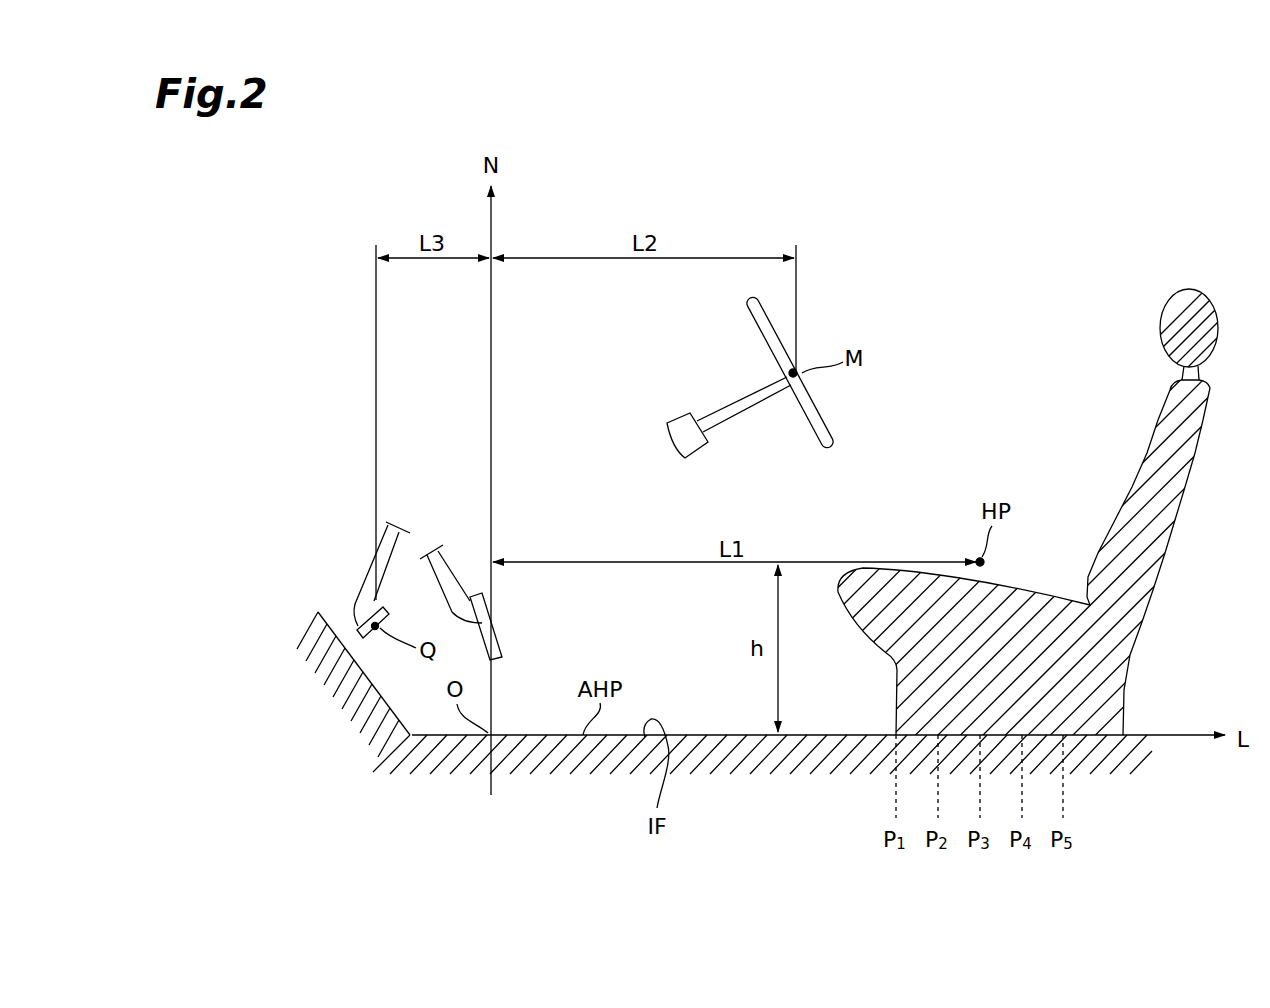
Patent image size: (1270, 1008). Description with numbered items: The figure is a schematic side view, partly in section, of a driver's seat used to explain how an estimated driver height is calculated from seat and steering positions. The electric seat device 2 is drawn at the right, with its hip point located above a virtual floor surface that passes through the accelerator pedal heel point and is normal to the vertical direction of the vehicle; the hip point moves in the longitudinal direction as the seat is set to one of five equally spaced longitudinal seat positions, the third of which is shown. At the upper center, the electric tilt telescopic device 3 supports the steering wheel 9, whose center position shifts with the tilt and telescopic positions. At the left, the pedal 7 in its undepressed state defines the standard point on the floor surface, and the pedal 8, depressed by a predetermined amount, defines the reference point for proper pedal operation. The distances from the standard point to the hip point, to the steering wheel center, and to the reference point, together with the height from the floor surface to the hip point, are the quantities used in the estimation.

The electric seat device 2 is at (1156, 578).
The electric tilt telescopic device 3 is at (688, 415).
The pedal 7 is at (478, 592).
The pedal 8 is at (356, 626).
The steering wheel 9 is at (832, 438).